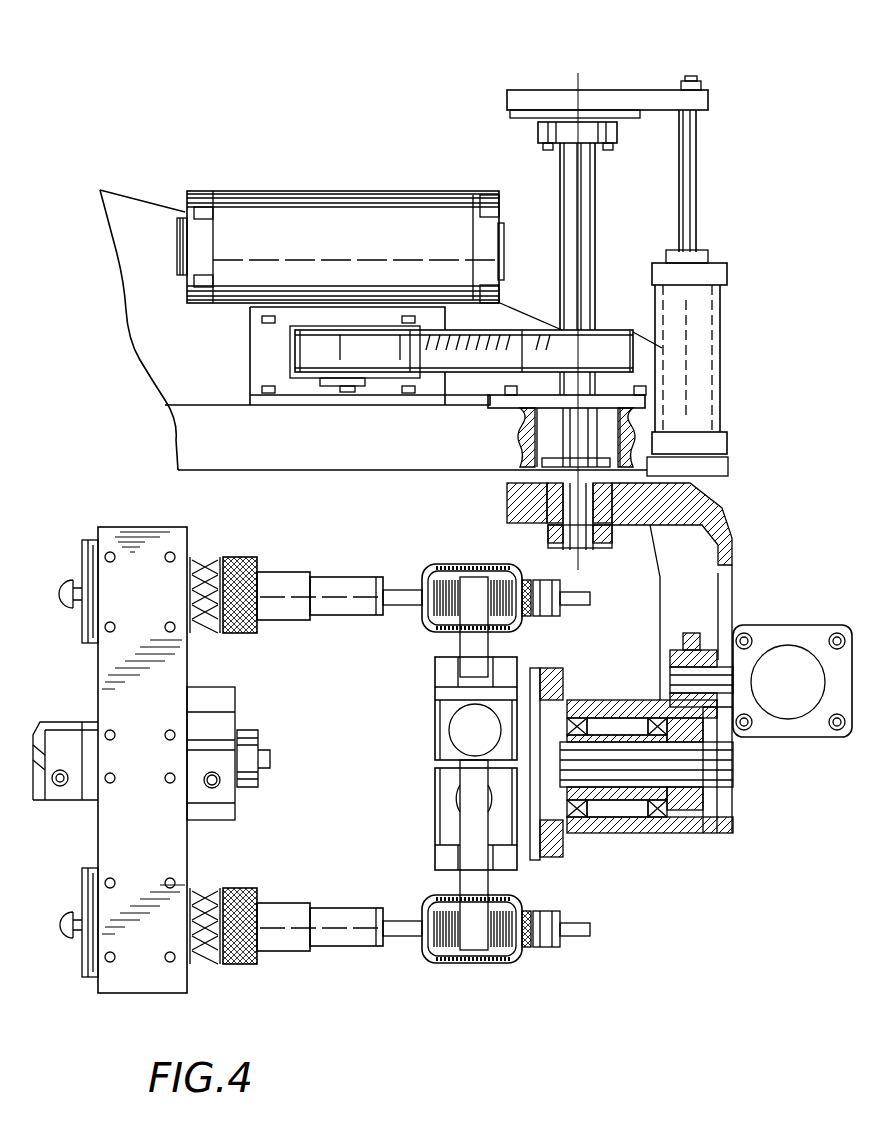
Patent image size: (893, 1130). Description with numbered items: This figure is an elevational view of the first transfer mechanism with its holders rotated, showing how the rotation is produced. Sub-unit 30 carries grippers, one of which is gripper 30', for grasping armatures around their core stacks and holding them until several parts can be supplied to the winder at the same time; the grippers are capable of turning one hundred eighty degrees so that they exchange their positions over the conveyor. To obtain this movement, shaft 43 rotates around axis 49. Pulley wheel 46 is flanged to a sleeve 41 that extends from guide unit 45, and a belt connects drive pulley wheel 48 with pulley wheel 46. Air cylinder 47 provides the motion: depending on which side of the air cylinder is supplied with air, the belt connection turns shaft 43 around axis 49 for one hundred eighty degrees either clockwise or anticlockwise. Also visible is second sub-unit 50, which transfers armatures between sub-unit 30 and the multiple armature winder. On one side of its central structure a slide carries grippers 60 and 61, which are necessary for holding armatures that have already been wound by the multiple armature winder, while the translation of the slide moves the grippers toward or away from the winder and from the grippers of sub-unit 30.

The axis 49 is at (578, 76).
The air cylinder 47 is at (338, 220).
The shaft 43 is at (587, 252).
The pulley wheel 46 is at (614, 330).
The drive pulley wheel 48 is at (290, 332).
The sleeve 41 is at (557, 385).
The guide unit 45 is at (563, 418).
The gripper 60 is at (282, 605).
The gripper 30' is at (471, 614).
The sub-unit 30 is at (430, 763).
The gripper 61 is at (270, 912).
The second sub-unit 50 is at (57, 925).